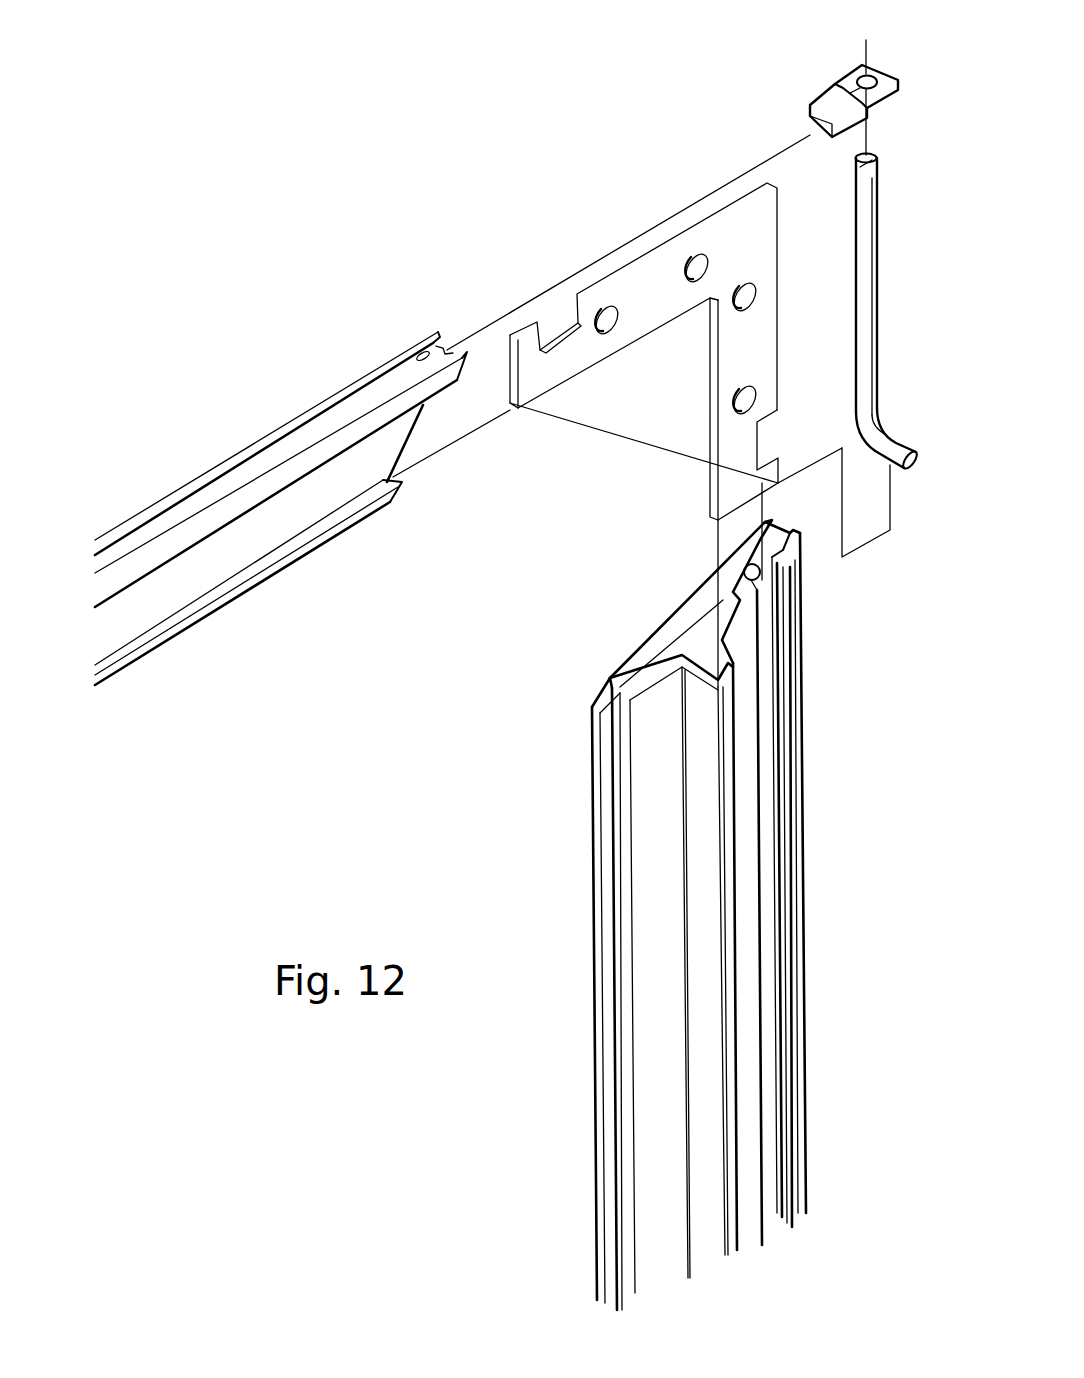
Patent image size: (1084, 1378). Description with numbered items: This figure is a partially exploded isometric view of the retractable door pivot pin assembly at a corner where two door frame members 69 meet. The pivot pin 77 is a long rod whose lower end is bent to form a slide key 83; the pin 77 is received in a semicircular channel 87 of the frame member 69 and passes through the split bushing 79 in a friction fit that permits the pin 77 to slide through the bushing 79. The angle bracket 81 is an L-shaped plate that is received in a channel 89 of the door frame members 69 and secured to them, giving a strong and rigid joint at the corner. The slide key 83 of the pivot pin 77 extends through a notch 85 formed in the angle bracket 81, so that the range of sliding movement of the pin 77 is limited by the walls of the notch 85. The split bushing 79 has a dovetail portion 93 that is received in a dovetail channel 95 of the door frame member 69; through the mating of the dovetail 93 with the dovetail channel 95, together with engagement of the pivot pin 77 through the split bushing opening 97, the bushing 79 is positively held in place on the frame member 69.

The door frame member 69 is at (510, 722).
The pivot pin 77 is at (907, 312).
The split bushing 79 is at (822, 243).
The angle bracket 81 is at (700, 435).
The slide key 83 is at (918, 458).
The notch 85 is at (767, 453).
The semicircular channel 87 is at (770, 612).
The channel 89 is at (313, 502).
The dovetail portion 93 is at (807, 85).
The dovetail channel 95 is at (389, 380).
The split bushing opening 97 is at (872, 76).